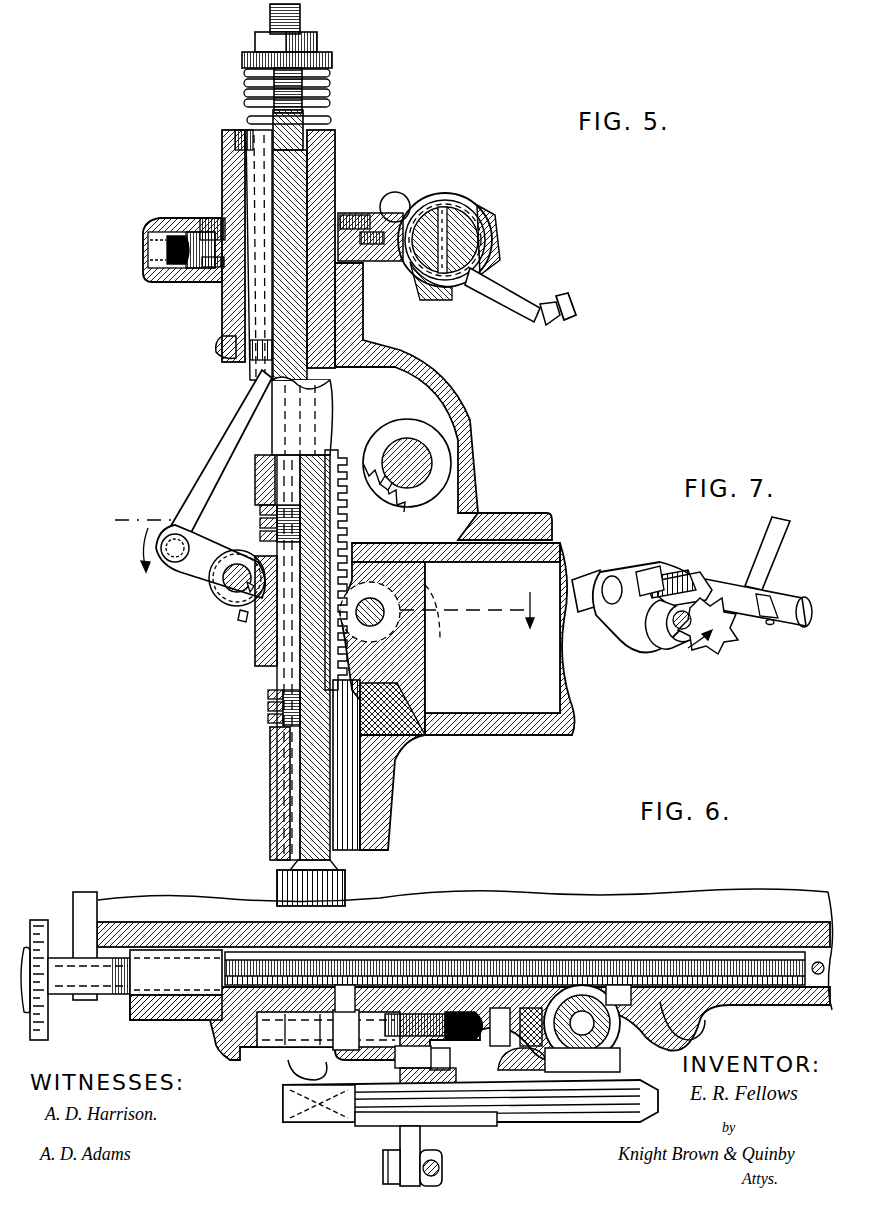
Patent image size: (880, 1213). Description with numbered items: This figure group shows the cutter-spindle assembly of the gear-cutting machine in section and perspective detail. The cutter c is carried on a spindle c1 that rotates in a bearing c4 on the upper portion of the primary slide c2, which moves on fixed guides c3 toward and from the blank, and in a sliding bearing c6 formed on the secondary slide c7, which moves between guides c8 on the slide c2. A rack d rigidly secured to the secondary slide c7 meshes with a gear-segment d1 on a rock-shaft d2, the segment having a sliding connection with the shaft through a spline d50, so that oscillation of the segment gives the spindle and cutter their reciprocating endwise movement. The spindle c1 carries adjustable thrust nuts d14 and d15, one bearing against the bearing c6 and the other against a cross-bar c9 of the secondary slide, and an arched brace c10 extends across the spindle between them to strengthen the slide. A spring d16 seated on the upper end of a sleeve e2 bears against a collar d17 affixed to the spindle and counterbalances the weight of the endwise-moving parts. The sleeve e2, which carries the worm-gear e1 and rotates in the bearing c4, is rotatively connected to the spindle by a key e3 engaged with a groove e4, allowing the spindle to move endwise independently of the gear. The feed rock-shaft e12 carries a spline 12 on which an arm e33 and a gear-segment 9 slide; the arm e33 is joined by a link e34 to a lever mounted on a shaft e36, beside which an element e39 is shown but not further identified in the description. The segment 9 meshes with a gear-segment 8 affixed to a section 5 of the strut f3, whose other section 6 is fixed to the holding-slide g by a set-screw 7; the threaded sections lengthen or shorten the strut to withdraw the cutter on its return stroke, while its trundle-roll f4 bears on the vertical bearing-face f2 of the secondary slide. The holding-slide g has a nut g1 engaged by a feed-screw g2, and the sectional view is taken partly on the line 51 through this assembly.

In FIG. 5, the collar d17 is at (333, 58).
In FIG. 5, the spring d16 is at (333, 88).
In FIG. 5, the sleeve e2 is at (336, 150).
In FIG. 5, the key e3 is at (250, 184).
In FIG. 5, the worm-gear e1 is at (190, 272).
In FIG. 5, the bearing c4 is at (222, 322).
In FIG. 5, the groove e4 is at (272, 366).
In FIG. 5, the ring e39 is at (478, 222).
In FIG. 5, the shaft e36 is at (472, 241).
In FIG. 5, the primary slide c2 is at (478, 490).
In FIG. 6, the primary slide c2 is at (497, 960).
In FIG. 5, the fixed guides c3 is at (432, 575).
In FIG. 5, the strut section 6 is at (327, 568).
In FIG. 7, the strut section 6 is at (672, 585).
In FIG. 6, the strut section 6 is at (348, 1040).
In FIG. 5, the feed-screw g2 is at (384, 620).
In FIG. 6, the feed-screw g2 is at (118, 982).
In FIG. 5, the secondary slide c7 is at (365, 612).
In FIG. 6, the secondary slide c7 is at (582, 1021).
In FIG. 5, the rack d is at (390, 448).
In FIG. 6, the rack d is at (614, 960).
In FIG. 5, the rock-shaft d2 is at (435, 450).
In FIG. 5, the spline d50 is at (388, 490).
In FIG. 5, the gear-segment d1 is at (412, 512).
In FIG. 5, the cutter-spindle c1 is at (275, 432).
In FIG. 6, the cutter-spindle c1 is at (614, 992).
In FIG. 5, the cross-bar c9 is at (258, 468).
In FIG. 5, the adjustable nut d15 is at (262, 522).
In FIG. 5, the link e34 is at (212, 500).
In FIG. 7, the link e34 is at (686, 550).
In FIG. 6, the link e34 is at (442, 1168).
In FIG. 5, the arm e33 is at (200, 580).
In FIG. 7, the arm e33 is at (622, 628).
In FIG. 6, the arm e33 is at (400, 1168).
In FIG. 5, the spline 12 is at (244, 568).
In FIG. 7, the spline 12 is at (690, 578).
In FIG. 5, the rock-shaft e12 is at (230, 594).
In FIG. 7, the rock-shaft e12 is at (668, 648).
In FIG. 6, the rock-shaft e12 is at (622, 1096).
In FIG. 5, the gear-segment 9 is at (243, 622).
In FIG. 7, the gear-segment 9 is at (694, 648).
In FIG. 6, the gear-segment 9 is at (428, 1085).
In FIG. 5, the arched brace c10 is at (258, 640).
In FIG. 5, the gear-segment 8 is at (268, 692).
In FIG. 7, the gear-segment 8 is at (706, 580).
In FIG. 6, the gear-segment 8 is at (400, 1060).
In FIG. 5, the adjustable nut d14 is at (283, 716).
In FIG. 5, the sliding bearing c6 is at (270, 750).
In FIG. 5, the cutter c is at (275, 883).
In FIG. 7, the strut section 5 is at (756, 602).
In FIG. 6, the strut section 5 is at (440, 1059).
In FIG. 7, the strut f3 is at (760, 594).
In FIG. 6, the strut f3 is at (385, 1045).
In FIG. 6, the nut g1 is at (176, 972).
In FIG. 6, the holding-slide g is at (184, 1020).
In FIG. 6, the set-screw 7 is at (292, 1078).
In FIG. 6, the guides c8 is at (712, 1020).
In FIG. 6, the trundle-roll f4 is at (522, 1065).
In FIG. 6, the bearing-face f2 is at (575, 1065).
In FIG. 6, the section line 51 is at (470, 1006).